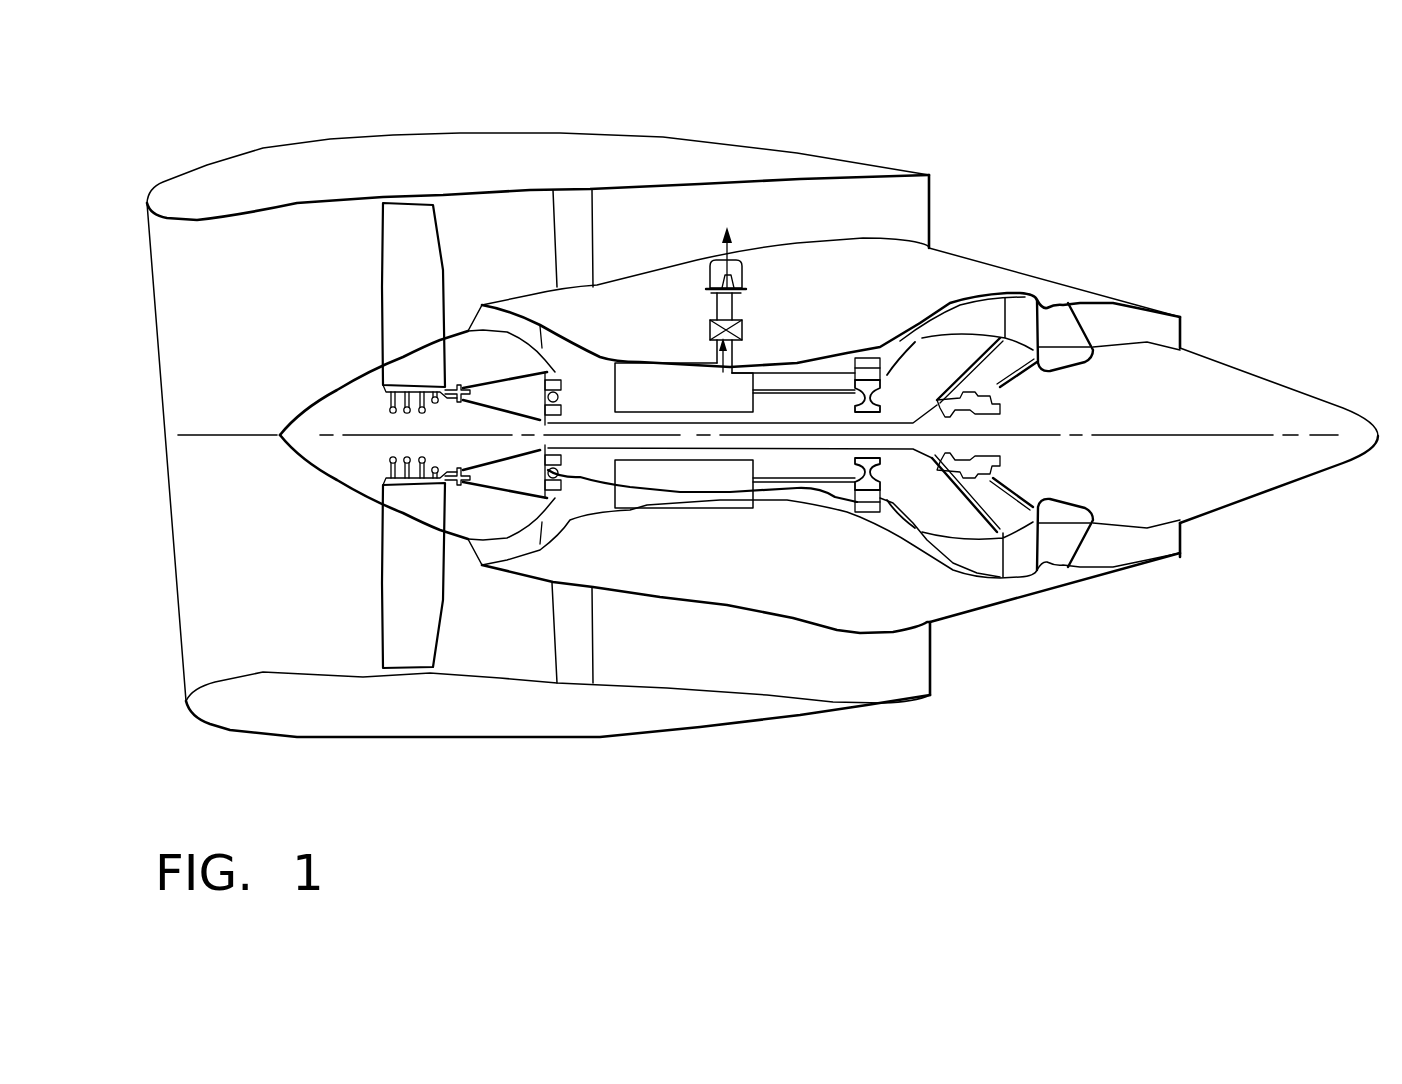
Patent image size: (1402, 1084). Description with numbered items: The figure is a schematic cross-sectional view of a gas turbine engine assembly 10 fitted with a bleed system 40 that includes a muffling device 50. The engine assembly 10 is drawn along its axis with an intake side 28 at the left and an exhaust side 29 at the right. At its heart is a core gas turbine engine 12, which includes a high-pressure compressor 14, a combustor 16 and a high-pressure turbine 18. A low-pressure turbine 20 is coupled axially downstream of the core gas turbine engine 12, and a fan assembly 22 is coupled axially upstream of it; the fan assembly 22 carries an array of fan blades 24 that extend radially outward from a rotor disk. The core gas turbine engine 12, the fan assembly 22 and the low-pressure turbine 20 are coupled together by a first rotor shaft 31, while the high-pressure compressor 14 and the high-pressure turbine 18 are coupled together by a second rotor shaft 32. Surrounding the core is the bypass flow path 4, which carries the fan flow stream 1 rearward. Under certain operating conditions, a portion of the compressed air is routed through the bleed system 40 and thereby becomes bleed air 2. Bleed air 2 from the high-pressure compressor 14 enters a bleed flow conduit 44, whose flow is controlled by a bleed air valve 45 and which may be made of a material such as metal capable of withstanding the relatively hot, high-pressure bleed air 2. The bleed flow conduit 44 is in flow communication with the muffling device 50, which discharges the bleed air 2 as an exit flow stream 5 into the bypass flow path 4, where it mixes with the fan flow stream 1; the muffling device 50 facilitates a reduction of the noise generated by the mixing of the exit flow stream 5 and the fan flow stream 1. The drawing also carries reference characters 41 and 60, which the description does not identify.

The gas turbine engine assembly 10 is at (834, 92).
The intake side 28 is at (126, 236).
The fan blades 24 is at (407, 275).
The bypass flow path 4 is at (690, 197).
The fan flow stream 1 is at (666, 206).
The discharge airflow 60 is at (749, 227).
The exit flow stream 5 is at (719, 258).
The muffling device 50 is at (699, 247).
The core cowl 41 is at (825, 238).
The bleed system 40 is at (779, 286).
The low-pressure turbine 20 is at (963, 312).
The fan assembly 22 is at (498, 340).
The bleed flow conduit 44 is at (715, 302).
The bleed air valve 45 is at (707, 322).
The core gas turbine engine 12 is at (829, 340).
The combustor 16 is at (822, 350).
The high-pressure compressor 14 is at (637, 377).
The bleed air 2 is at (705, 378).
The first rotor shaft 31 is at (627, 458).
The second rotor shaft 32 is at (812, 487).
The high-pressure turbine 18 is at (857, 531).
The exhaust side 29 is at (1210, 561).